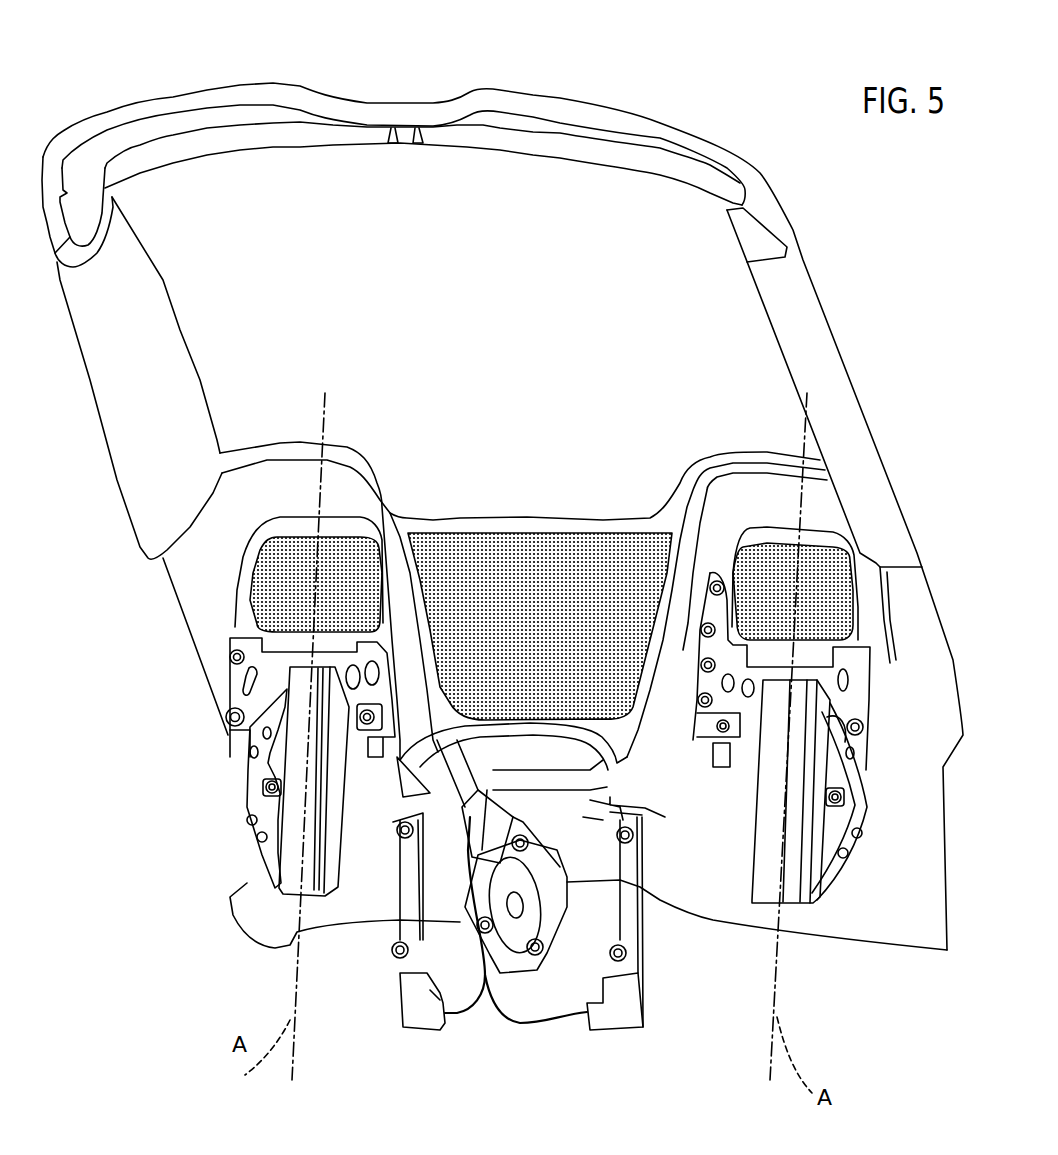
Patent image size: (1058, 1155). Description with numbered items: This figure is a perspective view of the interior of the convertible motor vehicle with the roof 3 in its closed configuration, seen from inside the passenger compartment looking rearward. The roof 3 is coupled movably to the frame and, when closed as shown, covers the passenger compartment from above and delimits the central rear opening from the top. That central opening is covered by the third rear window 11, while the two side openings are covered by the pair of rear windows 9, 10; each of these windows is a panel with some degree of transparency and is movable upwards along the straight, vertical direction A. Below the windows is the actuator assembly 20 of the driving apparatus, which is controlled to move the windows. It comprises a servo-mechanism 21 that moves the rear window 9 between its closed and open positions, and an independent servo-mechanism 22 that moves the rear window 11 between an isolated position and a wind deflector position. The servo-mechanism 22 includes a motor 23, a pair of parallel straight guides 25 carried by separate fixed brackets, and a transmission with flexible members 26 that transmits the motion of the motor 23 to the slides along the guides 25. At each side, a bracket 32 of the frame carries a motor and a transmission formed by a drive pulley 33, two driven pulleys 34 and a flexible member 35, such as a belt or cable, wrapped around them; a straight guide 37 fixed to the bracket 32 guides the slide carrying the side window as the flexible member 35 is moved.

The roof 3 is at (590, 182).
The rear window 9 is at (785, 565).
The rear window 10 is at (287, 578).
The third rear window 11 is at (540, 593).
The actuator assembly 20 is at (512, 878).
The servo-mechanism 21 is at (553, 840).
The servo-mechanism 22 is at (543, 987).
The motor 23 is at (485, 817).
The parallel straight guides 25 is at (400, 907).
The transmission with flexible members 26 is at (480, 1020).
The bracket 32 is at (250, 847).
The drive pulley 33 is at (260, 783).
The driven pulleys 34 is at (830, 717).
The flexible member 35 is at (855, 752).
The straight guide 37 is at (337, 813).